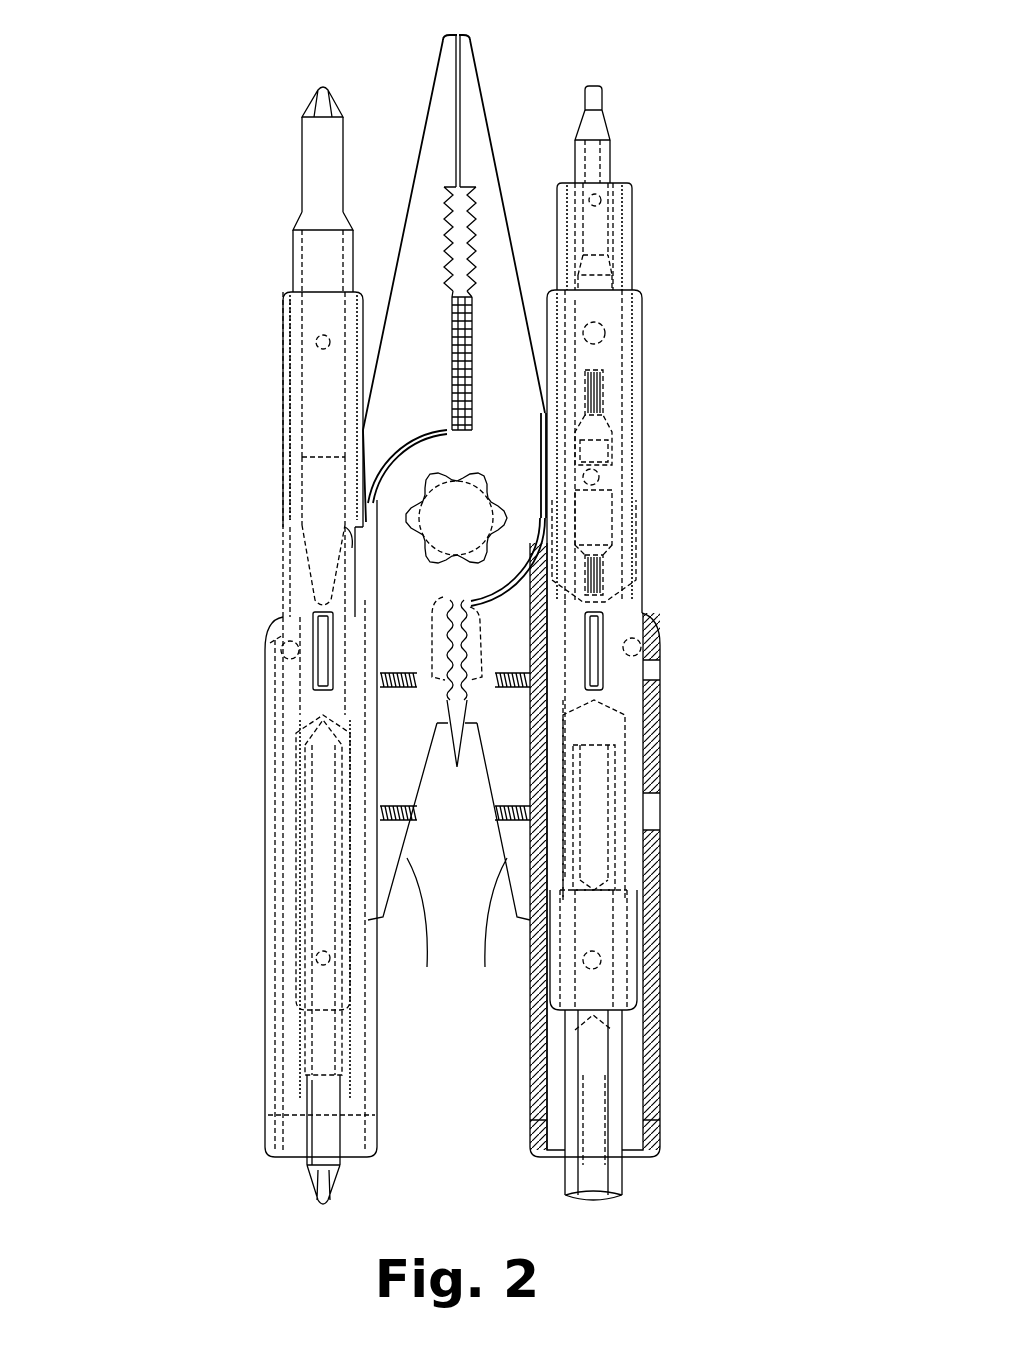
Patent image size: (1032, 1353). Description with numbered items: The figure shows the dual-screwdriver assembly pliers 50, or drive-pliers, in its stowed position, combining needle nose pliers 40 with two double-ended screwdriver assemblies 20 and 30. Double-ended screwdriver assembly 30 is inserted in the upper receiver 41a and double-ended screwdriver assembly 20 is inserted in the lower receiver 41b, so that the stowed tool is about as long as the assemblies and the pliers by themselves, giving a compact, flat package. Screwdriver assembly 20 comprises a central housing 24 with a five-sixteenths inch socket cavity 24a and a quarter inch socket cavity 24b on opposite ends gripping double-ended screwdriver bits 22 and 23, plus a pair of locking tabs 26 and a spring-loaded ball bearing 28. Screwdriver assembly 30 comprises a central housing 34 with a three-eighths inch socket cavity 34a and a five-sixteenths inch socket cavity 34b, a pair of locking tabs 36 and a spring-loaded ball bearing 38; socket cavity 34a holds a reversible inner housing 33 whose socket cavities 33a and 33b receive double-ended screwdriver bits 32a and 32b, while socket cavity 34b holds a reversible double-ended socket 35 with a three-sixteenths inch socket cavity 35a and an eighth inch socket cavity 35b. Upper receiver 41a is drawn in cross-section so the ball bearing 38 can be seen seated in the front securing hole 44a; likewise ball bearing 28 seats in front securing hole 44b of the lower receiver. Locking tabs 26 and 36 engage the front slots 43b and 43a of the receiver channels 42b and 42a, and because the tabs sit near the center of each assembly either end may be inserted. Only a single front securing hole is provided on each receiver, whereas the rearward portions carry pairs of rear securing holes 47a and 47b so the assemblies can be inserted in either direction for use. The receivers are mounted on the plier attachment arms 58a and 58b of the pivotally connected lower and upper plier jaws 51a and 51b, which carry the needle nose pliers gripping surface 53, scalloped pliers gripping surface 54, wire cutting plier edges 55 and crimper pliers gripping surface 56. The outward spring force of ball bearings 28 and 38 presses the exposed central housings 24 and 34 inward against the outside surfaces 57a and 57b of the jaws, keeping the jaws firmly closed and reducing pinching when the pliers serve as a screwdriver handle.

The double-ended screwdriver assembly 20 is at (242, 465).
The double-ended screwdriver bit 22 is at (308, 146).
The double-ended screwdriver bit 23 is at (312, 1176).
The central housing 24 is at (290, 527).
The 5/16 inch socket cavity 24a is at (293, 375).
The 1/4 inch socket cavity 24b is at (297, 973).
The locking tabs 26 is at (313, 676).
The spring-loaded ball bearing 28 is at (270, 642).
The double-ended screwdriver assembly 30 is at (687, 341).
The double-ended screwdriver bit 32a is at (615, 508).
The double-ended screwdriver bit 32b is at (613, 157).
The inner housing 33 is at (627, 268).
The 1/4 inch socket cavity 33a is at (615, 398).
The 3/16 inch socket cavity 33b is at (617, 218).
The central housing 34 is at (640, 471).
The 3/8 inch socket cavity 34a is at (630, 318).
The 5/16 inch socket cavity 34b is at (627, 970).
The double-ended socket 35 is at (625, 1032).
The 3/16 inch socket cavity 35a is at (615, 1186).
The 1/8 inch socket cavity 35b is at (615, 776).
The locking tabs 36 is at (605, 680).
The spring-loaded ball bearing 38 is at (640, 612).
The needle nose pliers 40 is at (522, 118).
The upper receiver 41a is at (702, 859).
The lower receiver 41b is at (228, 877).
The upper receiver channel 42a is at (548, 1108).
The lower receiver channel 42b is at (277, 1050).
The front slots 43a is at (607, 690).
The front slots 43b is at (318, 692).
The front securing hole 44a is at (652, 636).
The front securing hole 44b is at (305, 583).
The rear securing holes 47a is at (650, 1126).
The rear securing holes 47b is at (373, 1124).
The dual-screwdriver assembly pliers 50 is at (219, 219).
The lower plier jaw 51a is at (433, 84).
The upper plier jaw 51b is at (483, 97).
The needle nose pliers gripping surface 53 is at (457, 124).
The scalloped pliers gripping surface 54 is at (447, 228).
The wire cutting plier edges 55 is at (457, 338).
The crimper pliers gripping surface 56 is at (457, 698).
The outside surface 57a is at (363, 443).
The outside surface 57b is at (615, 449).
The plier attachment arm 58a is at (501, 860).
The plier attachment arm 58b is at (402, 860).